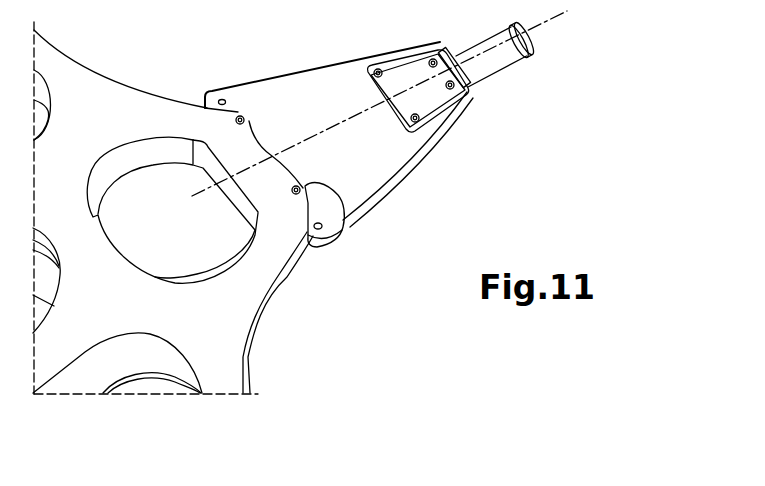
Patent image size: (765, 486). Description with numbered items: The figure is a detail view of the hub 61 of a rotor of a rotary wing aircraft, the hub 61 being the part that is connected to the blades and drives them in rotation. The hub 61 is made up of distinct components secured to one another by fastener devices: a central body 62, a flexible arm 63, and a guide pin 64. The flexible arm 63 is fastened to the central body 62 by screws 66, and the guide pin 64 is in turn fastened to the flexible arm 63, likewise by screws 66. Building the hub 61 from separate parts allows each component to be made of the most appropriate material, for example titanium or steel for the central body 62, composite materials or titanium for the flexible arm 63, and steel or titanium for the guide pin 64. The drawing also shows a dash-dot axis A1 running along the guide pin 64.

The hub 61 is at (333, 346).
The central body 62 is at (103, 107).
The flexible arm 63 is at (383, 168).
The guide pin 64 is at (507, 58).
The screws 66 is at (240, 115).
The axis A1 is at (547, 22).